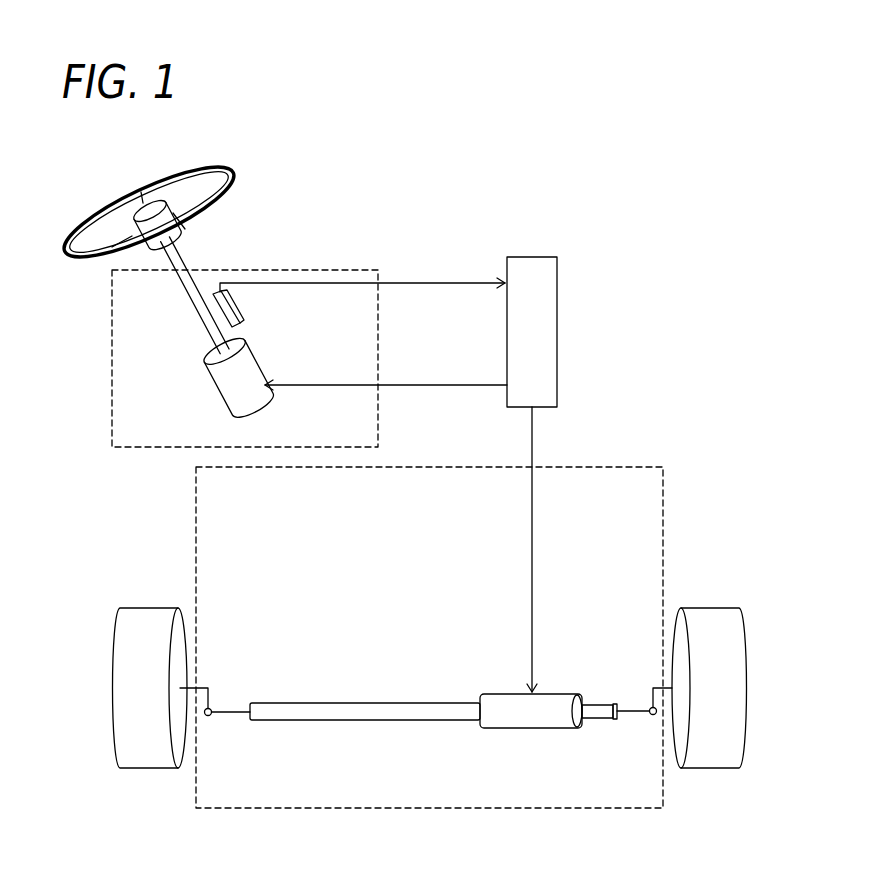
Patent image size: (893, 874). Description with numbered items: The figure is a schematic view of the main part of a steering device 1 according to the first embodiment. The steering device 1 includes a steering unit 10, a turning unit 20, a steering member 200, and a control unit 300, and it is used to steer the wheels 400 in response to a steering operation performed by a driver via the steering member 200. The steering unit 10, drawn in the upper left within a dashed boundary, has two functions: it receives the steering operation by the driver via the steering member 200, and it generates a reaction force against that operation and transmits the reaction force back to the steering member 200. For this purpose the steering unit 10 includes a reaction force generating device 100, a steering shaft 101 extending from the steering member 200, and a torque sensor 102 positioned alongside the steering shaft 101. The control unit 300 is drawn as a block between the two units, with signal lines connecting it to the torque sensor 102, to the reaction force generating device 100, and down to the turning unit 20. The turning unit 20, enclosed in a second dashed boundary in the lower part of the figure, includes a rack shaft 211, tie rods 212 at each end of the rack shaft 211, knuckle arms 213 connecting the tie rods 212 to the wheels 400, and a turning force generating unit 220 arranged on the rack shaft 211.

The steering device 1 is at (566, 184).
The steering unit 10 is at (337, 268).
The turning unit 20 is at (623, 465).
The reaction force generating device 100 is at (232, 388).
The steering shaft 101 is at (206, 322).
The torque sensor 102 is at (243, 310).
The steering member 200 is at (235, 170).
The rack shaft 211 is at (440, 722).
The tie rods 212 is at (222, 714).
The knuckle arms 213 is at (211, 694).
The turning force generating unit 220 is at (528, 714).
The control unit 300 is at (558, 320).
The wheels 400 is at (138, 606).